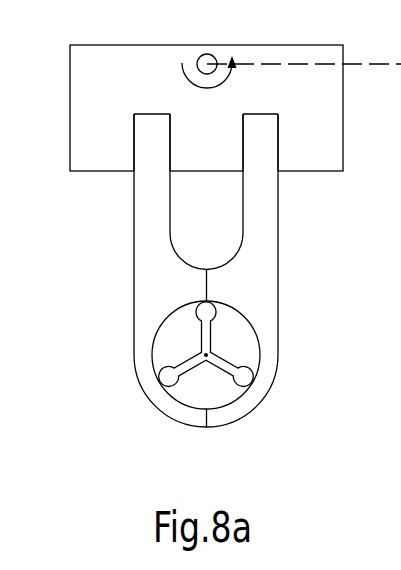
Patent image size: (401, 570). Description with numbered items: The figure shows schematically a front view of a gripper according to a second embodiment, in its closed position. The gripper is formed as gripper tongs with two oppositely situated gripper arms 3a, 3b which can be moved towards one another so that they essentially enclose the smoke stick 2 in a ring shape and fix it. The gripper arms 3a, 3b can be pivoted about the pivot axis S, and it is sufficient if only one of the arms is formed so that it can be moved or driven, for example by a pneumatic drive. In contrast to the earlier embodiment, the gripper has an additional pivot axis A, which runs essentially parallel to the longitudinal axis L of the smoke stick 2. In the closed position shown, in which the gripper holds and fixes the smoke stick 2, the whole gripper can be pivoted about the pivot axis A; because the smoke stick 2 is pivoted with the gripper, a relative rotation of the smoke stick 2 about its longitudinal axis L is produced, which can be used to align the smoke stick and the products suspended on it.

The pivot axis A is at (207, 53).
The pivot axis S is at (152, 130).
The gripper arm 3a is at (134, 307).
The gripper arm 3b is at (278, 307).
The smoke stick 2 is at (246, 378).
The longitudinal axis L is at (206, 358).